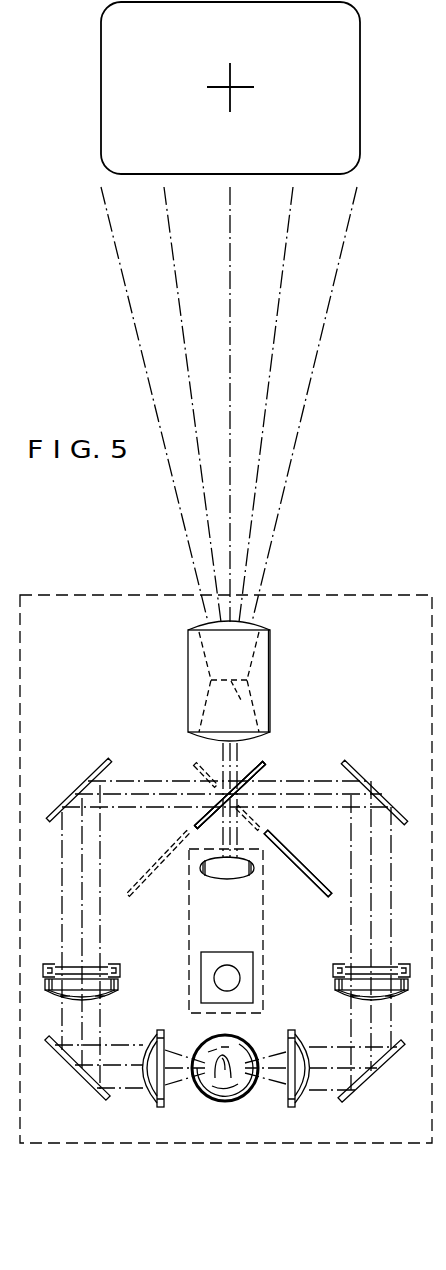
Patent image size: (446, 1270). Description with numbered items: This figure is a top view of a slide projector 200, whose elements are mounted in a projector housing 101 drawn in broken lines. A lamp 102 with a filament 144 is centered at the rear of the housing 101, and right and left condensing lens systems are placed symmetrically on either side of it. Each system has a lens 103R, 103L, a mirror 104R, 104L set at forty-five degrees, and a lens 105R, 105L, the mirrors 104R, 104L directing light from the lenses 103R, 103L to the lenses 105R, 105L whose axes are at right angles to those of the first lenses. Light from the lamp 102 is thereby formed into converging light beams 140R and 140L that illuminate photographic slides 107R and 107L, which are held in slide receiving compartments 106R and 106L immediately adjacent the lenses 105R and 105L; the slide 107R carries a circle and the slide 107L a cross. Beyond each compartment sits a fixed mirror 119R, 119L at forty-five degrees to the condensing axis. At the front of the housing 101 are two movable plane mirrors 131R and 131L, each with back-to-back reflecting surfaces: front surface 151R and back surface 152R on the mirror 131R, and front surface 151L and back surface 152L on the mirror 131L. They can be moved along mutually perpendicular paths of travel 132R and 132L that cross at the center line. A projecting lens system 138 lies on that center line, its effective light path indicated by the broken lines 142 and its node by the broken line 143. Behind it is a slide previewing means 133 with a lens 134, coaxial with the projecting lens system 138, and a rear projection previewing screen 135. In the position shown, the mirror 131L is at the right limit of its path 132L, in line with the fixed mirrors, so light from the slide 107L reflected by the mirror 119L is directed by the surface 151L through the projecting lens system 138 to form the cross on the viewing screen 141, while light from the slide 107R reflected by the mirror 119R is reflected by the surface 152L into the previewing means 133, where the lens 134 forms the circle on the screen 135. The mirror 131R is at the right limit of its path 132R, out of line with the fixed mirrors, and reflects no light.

The viewing screen 141 is at (117, 87).
The slide projector 200 is at (226, 821).
The projector housing 101 is at (115, 594).
The projecting lens system 138 is at (280, 675).
The effective light path 142 is at (205, 654).
The node of the lens system 143 is at (225, 700).
The converging light beam 140L is at (82, 918).
The converging light beam 140R is at (371, 912).
The fixed mirror 119L is at (88, 776).
The fixed mirror 119R is at (370, 782).
The front reflecting surface 151L is at (200, 818).
The front reflecting surface 151R is at (288, 851).
The plane mirror 131L is at (263, 762).
The back reflecting surface 152L is at (252, 776).
The path of travel 132R is at (253, 824).
The path of travel 132L is at (184, 838).
The plane mirror 131R is at (320, 893).
The back reflecting surface 152R is at (292, 852).
The slide previewing means 133 is at (189, 893).
The lens 134 is at (236, 880).
The rear projection previewing screen 135 is at (233, 950).
The photographic slide 107L is at (88, 966).
The slide receiving compartment 106L is at (120, 970).
The lens 105L is at (120, 987).
The photographic slide 107R is at (360, 966).
The slide receiving compartment 106R is at (337, 970).
The lens 105R is at (337, 987).
The mirror 104L is at (80, 1076).
The mirror 104R is at (368, 1078).
The lens 103L is at (158, 1106).
The lens 103R is at (302, 1108).
The lamp 102 is at (250, 1042).
The filament 144 is at (212, 1097).